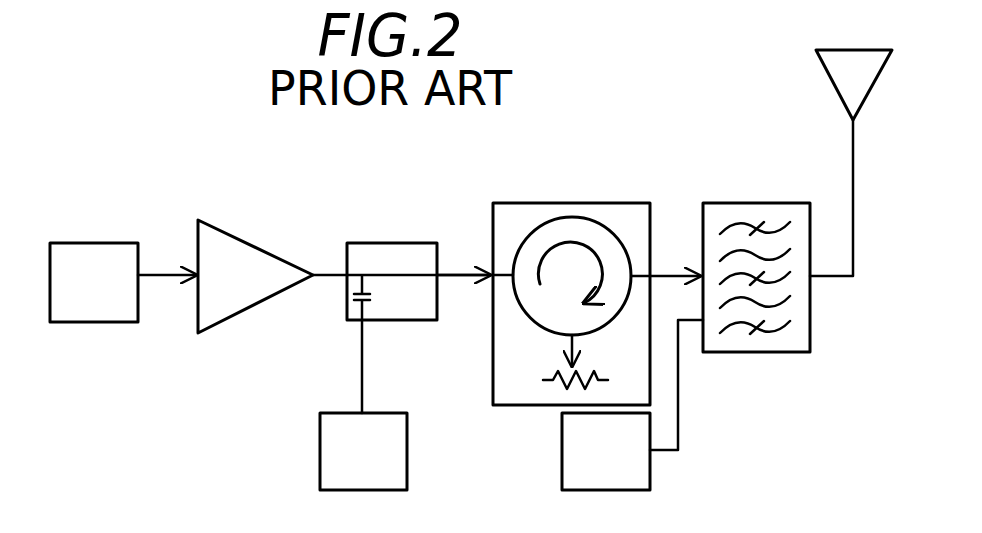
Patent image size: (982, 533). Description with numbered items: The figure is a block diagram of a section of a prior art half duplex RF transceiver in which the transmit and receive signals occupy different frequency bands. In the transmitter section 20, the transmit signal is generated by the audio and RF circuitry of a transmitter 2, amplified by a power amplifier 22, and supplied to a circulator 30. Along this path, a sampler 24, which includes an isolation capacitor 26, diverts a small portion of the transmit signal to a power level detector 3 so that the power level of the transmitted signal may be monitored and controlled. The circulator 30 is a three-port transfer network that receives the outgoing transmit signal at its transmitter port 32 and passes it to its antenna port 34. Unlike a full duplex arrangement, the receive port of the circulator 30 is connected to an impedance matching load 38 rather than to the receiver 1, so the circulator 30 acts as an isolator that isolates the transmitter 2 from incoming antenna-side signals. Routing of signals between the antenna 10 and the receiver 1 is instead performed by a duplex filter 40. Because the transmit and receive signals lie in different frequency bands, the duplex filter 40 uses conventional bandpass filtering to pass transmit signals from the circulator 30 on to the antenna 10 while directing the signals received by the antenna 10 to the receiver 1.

The receiver 1 is at (560, 453).
The transmitter 2 is at (87, 241).
The power level detector 3 is at (352, 412).
The antenna 10 is at (832, 90).
The transmitter section 20 is at (332, 242).
The power amplifier 22 is at (221, 233).
The sampler 24 is at (376, 242).
The isolation capacitor 26 is at (350, 300).
The circulator 30 is at (562, 202).
The transmitter port 32 is at (492, 282).
The antenna port 34 is at (656, 270).
The impedance matching load 38 is at (543, 380).
The duplex filter 40 is at (742, 202).